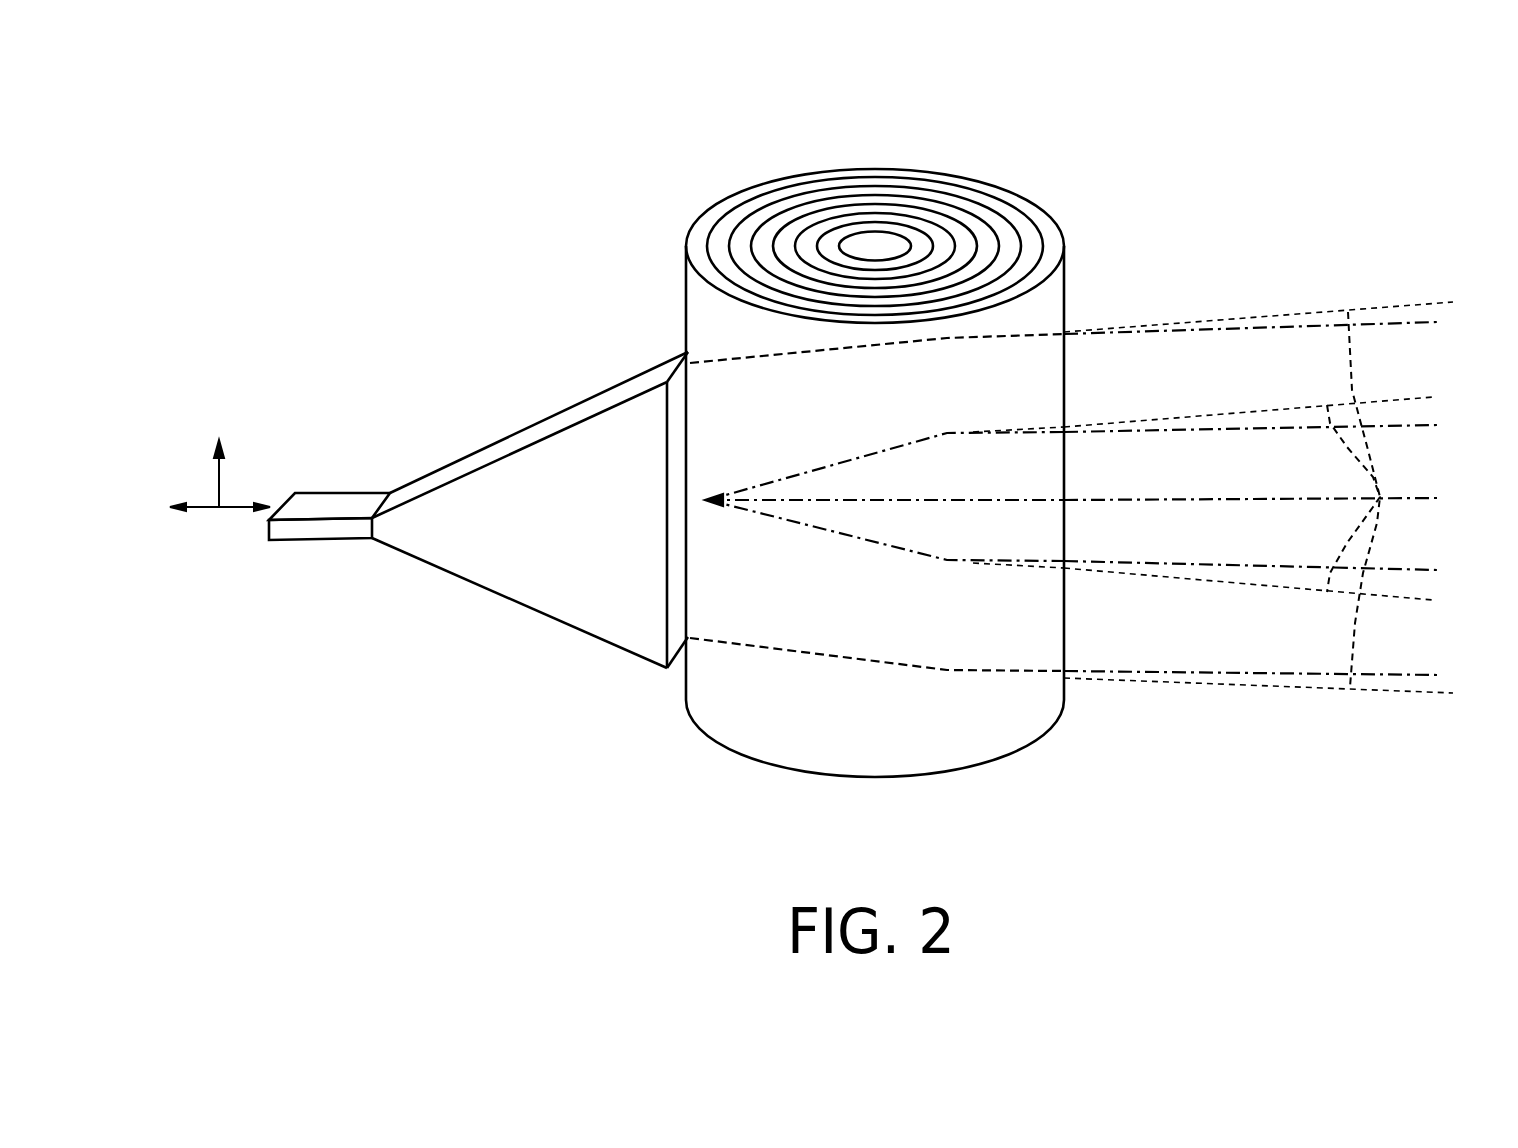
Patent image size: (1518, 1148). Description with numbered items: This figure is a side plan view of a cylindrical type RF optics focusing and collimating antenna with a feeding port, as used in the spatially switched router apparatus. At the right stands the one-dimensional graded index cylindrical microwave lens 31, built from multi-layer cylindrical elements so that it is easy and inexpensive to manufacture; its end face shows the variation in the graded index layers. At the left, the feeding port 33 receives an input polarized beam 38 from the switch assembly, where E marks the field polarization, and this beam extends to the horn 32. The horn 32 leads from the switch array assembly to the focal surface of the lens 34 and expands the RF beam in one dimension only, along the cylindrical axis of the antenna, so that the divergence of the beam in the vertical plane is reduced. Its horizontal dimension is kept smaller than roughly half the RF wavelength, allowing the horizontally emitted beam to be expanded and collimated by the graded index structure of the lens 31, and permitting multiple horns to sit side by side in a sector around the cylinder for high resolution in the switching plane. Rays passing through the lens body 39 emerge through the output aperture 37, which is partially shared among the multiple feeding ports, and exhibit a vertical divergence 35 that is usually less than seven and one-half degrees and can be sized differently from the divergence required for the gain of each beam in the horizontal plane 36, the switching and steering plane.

The cylindrical microwave lens 31 is at (923, 223).
The horn 32 is at (525, 457).
The feeding port 33 is at (319, 492).
The focal surface of the lens 34 is at (686, 301).
The vertical divergence 35 is at (1388, 260).
The horizontal plane 36 is at (1388, 530).
The output aperture 37 is at (1058, 298).
The input polarized beam 38 is at (208, 508).
The beam rays in lens 39 is at (1015, 612).